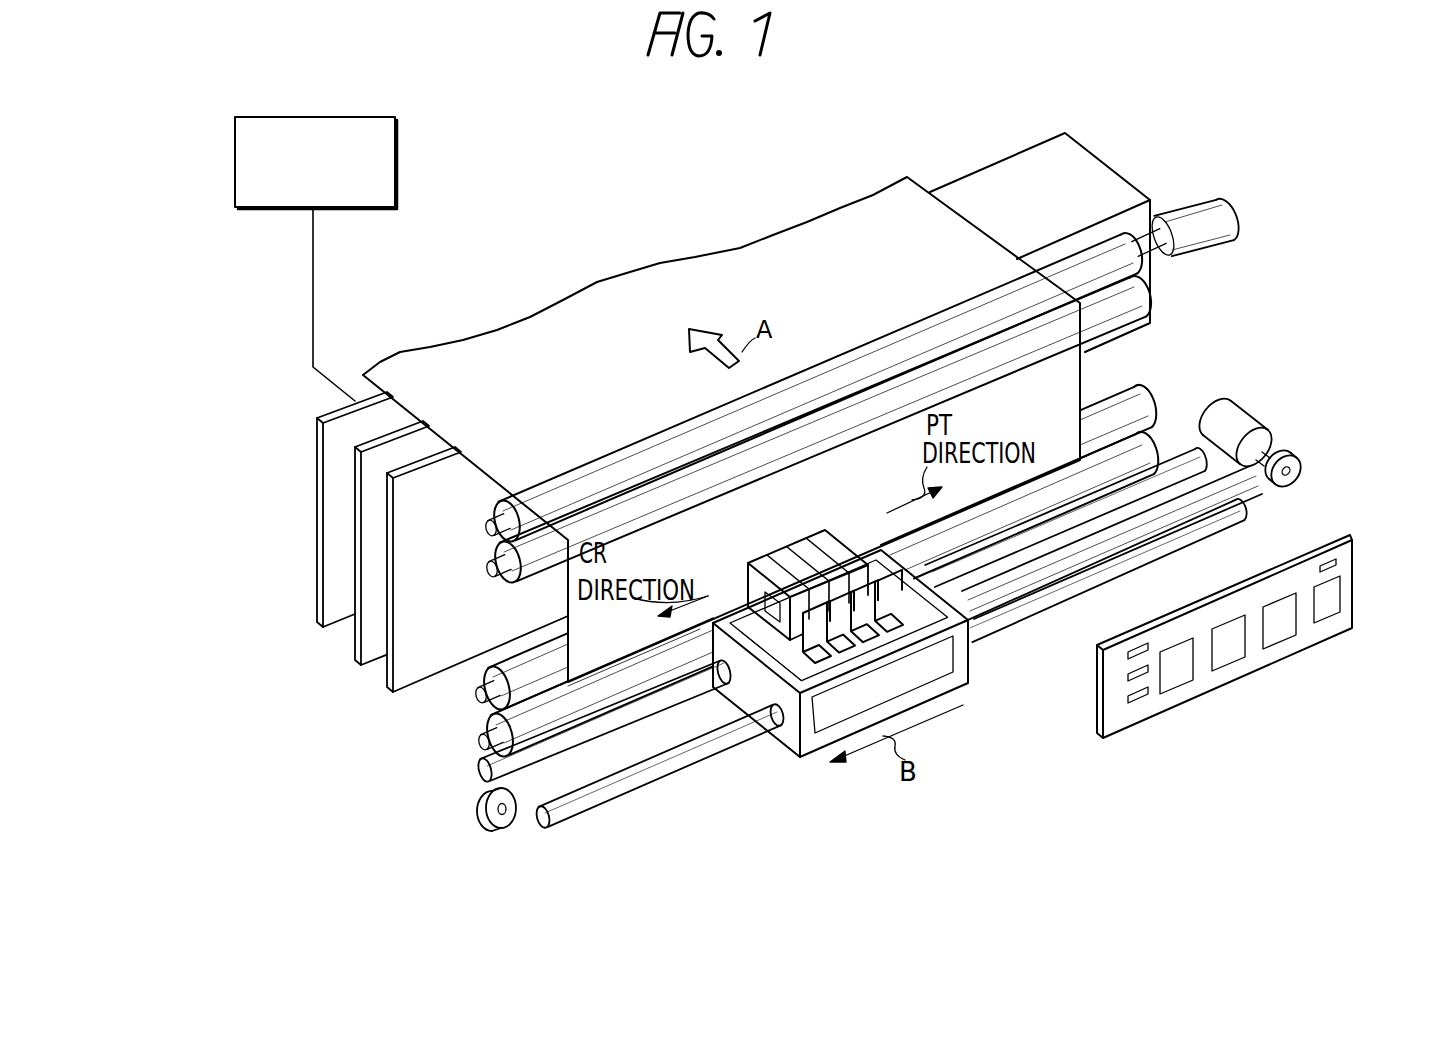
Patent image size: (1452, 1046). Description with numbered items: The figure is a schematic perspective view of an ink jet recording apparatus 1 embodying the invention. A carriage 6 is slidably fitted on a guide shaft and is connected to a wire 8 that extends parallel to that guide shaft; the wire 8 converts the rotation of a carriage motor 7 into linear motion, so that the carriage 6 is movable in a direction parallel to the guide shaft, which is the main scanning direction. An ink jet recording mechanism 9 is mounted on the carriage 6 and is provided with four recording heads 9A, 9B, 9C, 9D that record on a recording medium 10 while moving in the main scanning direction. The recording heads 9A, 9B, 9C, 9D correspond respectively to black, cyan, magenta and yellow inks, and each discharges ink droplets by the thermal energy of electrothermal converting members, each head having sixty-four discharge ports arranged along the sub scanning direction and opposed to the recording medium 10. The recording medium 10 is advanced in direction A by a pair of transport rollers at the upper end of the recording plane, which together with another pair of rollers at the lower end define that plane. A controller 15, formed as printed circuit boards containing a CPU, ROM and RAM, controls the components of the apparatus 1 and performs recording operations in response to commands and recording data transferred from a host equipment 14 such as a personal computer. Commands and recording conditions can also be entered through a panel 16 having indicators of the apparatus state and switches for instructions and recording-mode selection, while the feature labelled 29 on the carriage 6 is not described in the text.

The recording apparatus 1 is at (696, 214).
The carriage 6 is at (968, 665).
The carriage motor 7 is at (1240, 418).
The wire 8 is at (1262, 492).
The ink jet recording mechanism 9 is at (784, 547).
The recording head 9A is at (866, 547).
The recording head 9B is at (805, 557).
The recording head 9C is at (786, 560).
The recording head 9D is at (762, 562).
The recording medium 10 is at (875, 200).
The host equipment 14 is at (395, 170).
The controller 15 is at (378, 703).
The panel 16 is at (1365, 561).
The carriage rim 29 is at (970, 640).